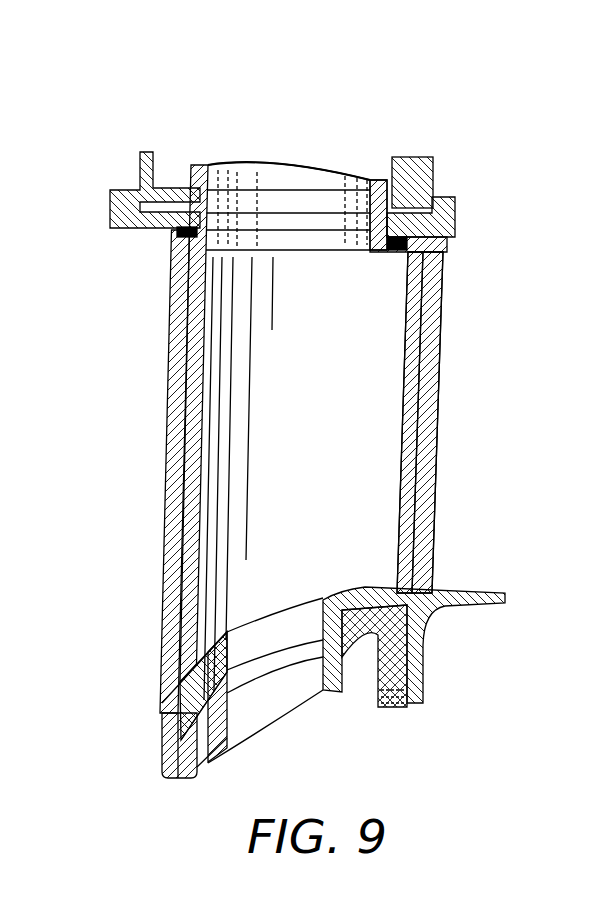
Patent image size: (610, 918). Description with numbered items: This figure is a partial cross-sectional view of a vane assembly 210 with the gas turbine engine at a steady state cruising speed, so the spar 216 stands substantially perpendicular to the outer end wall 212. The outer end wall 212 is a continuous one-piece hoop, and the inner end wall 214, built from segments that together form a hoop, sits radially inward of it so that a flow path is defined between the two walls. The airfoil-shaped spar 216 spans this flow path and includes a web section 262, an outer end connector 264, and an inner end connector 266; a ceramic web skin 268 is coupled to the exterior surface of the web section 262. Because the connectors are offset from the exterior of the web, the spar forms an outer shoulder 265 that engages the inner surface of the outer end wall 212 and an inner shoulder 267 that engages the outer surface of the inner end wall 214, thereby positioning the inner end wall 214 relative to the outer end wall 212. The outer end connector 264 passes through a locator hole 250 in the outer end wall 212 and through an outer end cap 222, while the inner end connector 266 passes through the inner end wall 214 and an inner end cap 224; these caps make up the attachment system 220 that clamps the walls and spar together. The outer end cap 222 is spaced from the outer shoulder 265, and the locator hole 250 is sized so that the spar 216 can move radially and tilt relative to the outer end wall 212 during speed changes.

The container assembly 210 is at (443, 126).
The outer end wall 212 is at (101, 209).
The inner end wall 214 is at (180, 719).
The spar 216 is at (302, 160).
The attachment system 220 is at (503, 171).
The outer end cap 222 is at (421, 167).
The inner end cap 224 is at (387, 636).
The locator hole 250 is at (181, 238).
The web section 262 is at (417, 380).
The outer end connector 264 is at (322, 182).
The outer shoulder 265 is at (388, 260).
The inner end connector 266 is at (310, 683).
The inner shoulder 267 is at (360, 583).
The ceramic web skin 268 is at (428, 499).